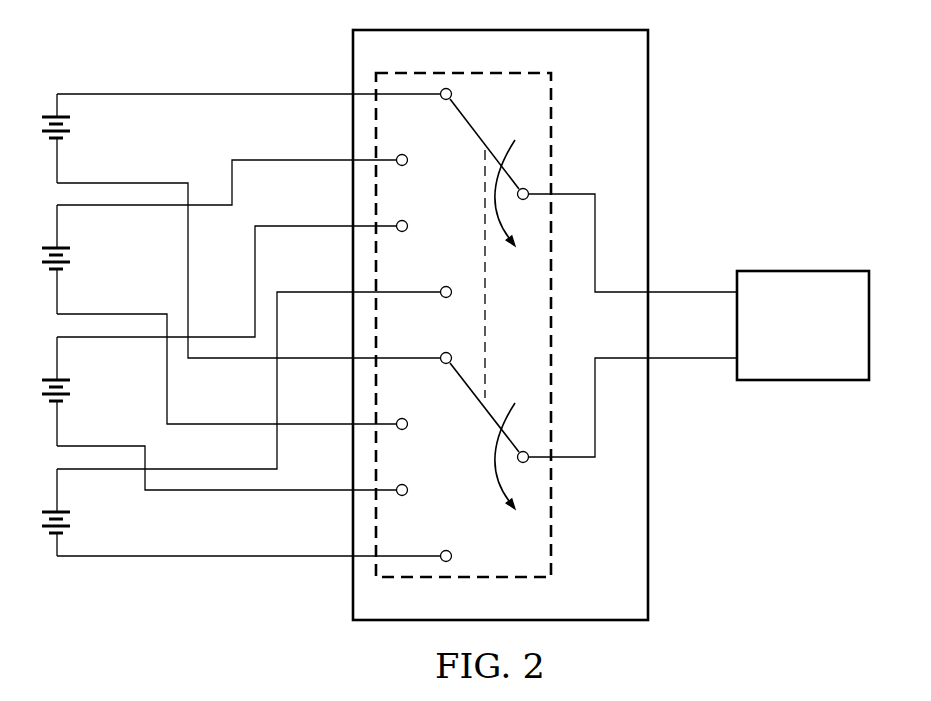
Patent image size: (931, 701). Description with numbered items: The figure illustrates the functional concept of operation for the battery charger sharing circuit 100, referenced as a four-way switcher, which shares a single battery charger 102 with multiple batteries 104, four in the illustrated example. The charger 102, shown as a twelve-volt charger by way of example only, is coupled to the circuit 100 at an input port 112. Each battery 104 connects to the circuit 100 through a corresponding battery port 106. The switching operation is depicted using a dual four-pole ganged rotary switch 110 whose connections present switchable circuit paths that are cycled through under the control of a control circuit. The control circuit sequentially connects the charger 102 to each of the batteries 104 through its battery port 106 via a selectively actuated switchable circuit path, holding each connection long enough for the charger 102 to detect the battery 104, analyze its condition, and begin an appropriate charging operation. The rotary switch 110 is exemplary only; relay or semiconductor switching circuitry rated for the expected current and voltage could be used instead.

The battery charger sharing circuit 100 is at (651, 51).
The battery charger 102 is at (806, 270).
The batteries 104 is at (71, 123).
The battery ports 106 is at (324, 586).
The rotary switch 110 is at (563, 473).
The input port 112 is at (712, 241).